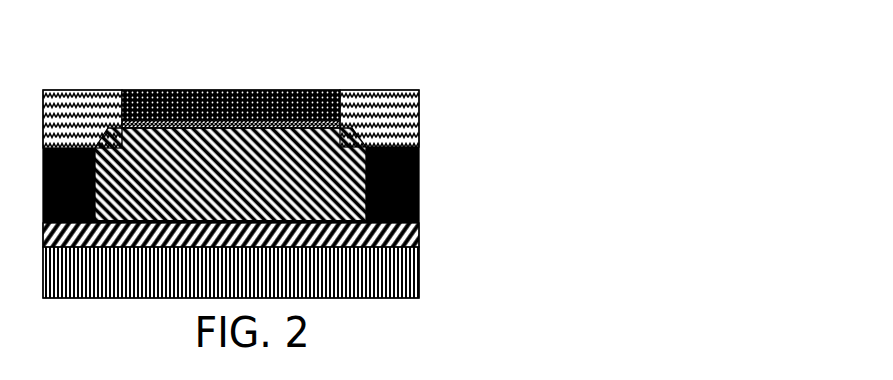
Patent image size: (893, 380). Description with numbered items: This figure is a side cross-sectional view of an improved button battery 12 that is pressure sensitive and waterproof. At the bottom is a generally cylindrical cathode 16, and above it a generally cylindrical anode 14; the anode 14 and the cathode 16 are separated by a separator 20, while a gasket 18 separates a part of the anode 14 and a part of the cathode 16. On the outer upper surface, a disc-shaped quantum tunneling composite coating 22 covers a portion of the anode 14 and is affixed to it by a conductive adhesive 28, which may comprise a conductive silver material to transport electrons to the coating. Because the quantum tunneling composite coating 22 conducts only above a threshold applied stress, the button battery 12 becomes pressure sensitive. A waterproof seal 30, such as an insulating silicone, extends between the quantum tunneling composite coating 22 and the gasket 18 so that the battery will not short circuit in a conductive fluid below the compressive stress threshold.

The button battery 12 is at (453, 43).
The anode 14 is at (215, 90).
The cathode 16 is at (419, 280).
The gasket 18 is at (421, 177).
The separator 20 is at (420, 228).
The quantum tunneling composite coating 22 is at (260, 90).
The conductive adhesive 28 is at (335, 90).
The waterproof seal 30 is at (72, 90).